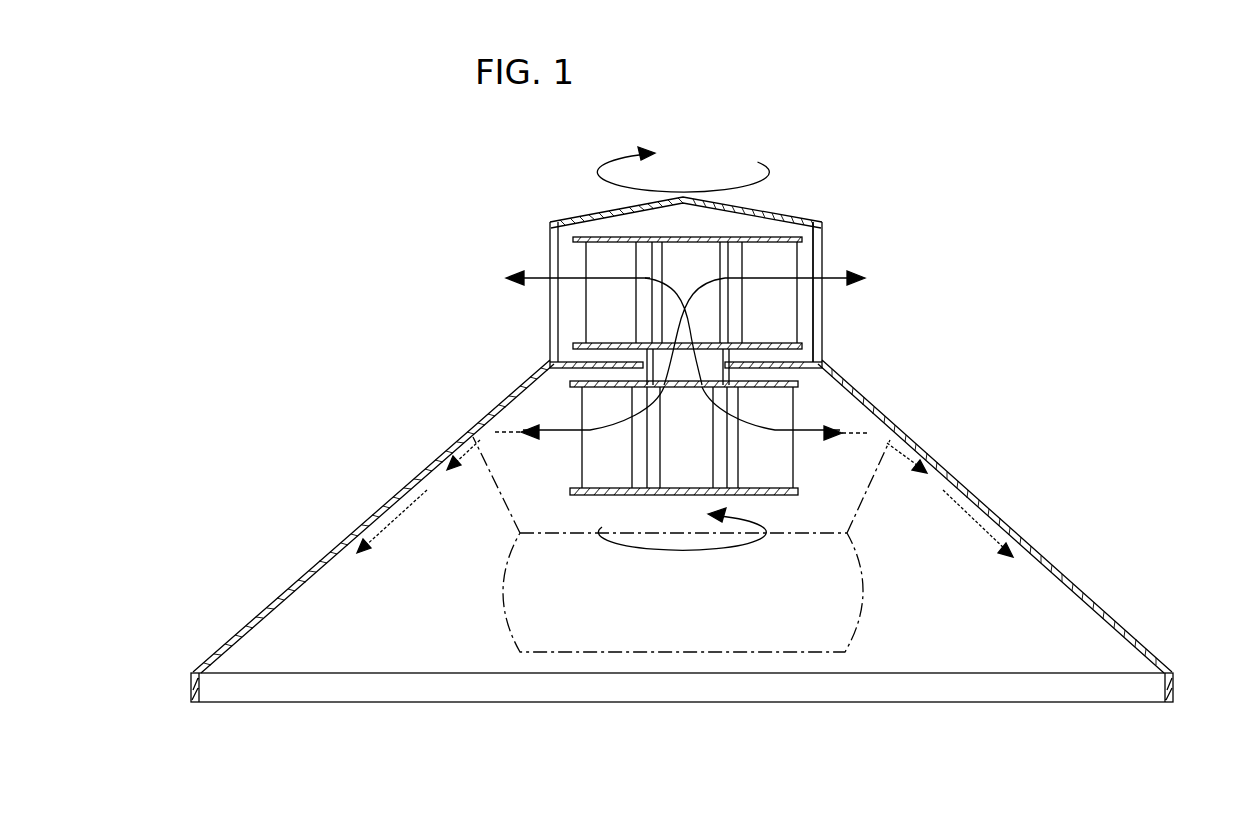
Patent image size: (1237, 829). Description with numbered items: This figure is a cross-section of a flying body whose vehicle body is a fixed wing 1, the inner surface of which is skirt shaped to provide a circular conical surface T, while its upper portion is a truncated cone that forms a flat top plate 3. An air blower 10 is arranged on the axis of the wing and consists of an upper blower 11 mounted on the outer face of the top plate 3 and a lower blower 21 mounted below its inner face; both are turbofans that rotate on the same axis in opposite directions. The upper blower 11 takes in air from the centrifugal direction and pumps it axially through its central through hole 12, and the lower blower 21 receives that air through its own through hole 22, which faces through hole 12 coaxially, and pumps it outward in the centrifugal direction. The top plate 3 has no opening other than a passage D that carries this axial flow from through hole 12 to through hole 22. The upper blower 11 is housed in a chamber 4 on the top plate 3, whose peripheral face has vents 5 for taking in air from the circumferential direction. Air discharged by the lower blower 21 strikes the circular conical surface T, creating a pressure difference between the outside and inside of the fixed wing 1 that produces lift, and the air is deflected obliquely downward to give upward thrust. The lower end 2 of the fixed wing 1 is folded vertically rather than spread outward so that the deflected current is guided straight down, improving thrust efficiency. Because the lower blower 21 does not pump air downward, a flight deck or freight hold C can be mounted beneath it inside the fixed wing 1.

The fixed wing 1 is at (1040, 513).
The lower end 2 is at (1175, 690).
The top plate 3 is at (590, 360).
The chamber 4 is at (795, 207).
The vents 5 is at (545, 248).
The air blower 10 is at (858, 308).
The upper blower 11 is at (810, 256).
The through hole 12 is at (665, 328).
The lower blower 21 is at (795, 410).
The through hole 22 is at (680, 398).
The passage D is at (810, 358).
The circular conical surface T is at (313, 583).
The flight deck or freight hold C is at (800, 652).